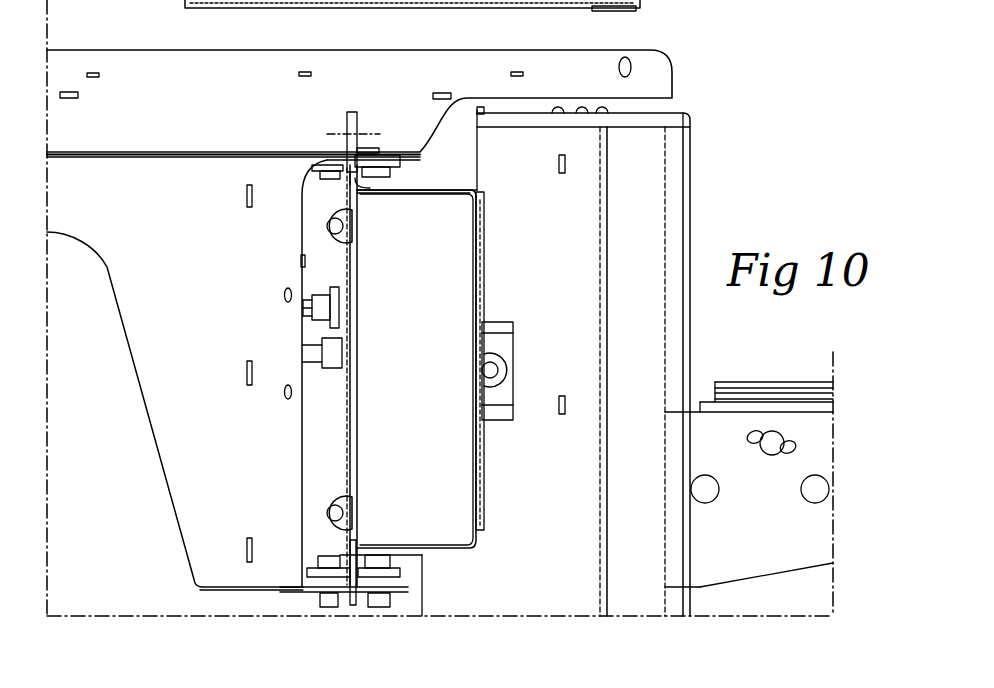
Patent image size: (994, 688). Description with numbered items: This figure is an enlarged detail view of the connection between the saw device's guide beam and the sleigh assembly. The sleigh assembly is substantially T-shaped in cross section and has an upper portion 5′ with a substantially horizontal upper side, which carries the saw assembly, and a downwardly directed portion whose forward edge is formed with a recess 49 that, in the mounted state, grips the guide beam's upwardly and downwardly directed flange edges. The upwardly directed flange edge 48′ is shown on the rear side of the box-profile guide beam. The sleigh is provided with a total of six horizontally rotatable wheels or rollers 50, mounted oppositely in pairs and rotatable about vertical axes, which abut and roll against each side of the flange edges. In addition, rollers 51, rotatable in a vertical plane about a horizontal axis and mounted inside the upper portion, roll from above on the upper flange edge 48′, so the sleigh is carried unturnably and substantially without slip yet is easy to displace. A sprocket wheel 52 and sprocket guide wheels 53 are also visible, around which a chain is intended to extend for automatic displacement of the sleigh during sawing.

The upper portion of the sleigh assembly 5′ is at (127, 70).
The upwardly directed flange edge 48′ is at (372, 185).
The recess 49 is at (323, 445).
The horizontally rotatable wheels or rollers 50 is at (330, 165).
The rollers 51 is at (350, 110).
The sprocket wheel 52 is at (337, 310).
The sprocket guide wheels 53 is at (333, 360).